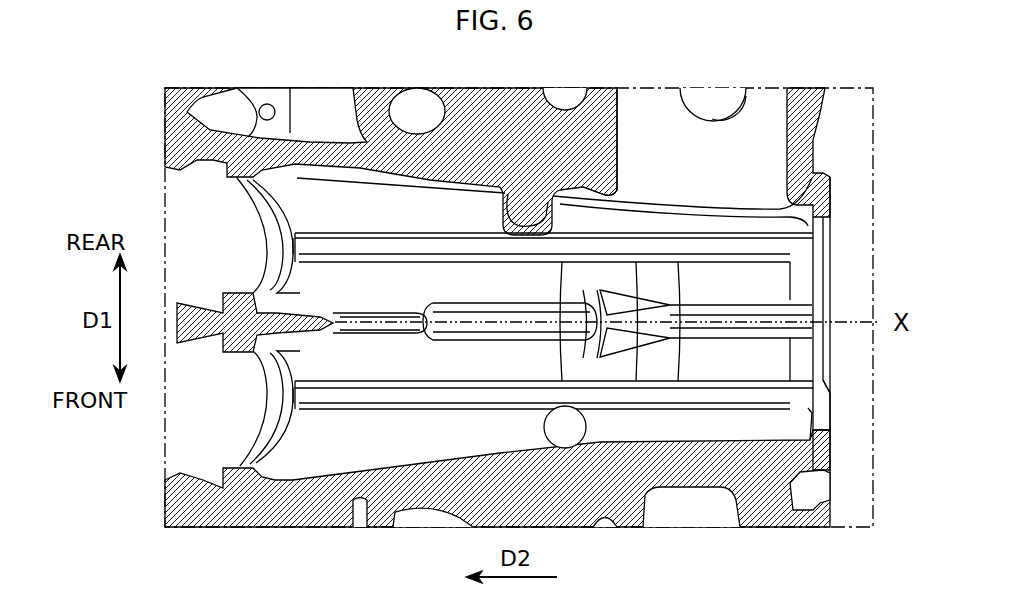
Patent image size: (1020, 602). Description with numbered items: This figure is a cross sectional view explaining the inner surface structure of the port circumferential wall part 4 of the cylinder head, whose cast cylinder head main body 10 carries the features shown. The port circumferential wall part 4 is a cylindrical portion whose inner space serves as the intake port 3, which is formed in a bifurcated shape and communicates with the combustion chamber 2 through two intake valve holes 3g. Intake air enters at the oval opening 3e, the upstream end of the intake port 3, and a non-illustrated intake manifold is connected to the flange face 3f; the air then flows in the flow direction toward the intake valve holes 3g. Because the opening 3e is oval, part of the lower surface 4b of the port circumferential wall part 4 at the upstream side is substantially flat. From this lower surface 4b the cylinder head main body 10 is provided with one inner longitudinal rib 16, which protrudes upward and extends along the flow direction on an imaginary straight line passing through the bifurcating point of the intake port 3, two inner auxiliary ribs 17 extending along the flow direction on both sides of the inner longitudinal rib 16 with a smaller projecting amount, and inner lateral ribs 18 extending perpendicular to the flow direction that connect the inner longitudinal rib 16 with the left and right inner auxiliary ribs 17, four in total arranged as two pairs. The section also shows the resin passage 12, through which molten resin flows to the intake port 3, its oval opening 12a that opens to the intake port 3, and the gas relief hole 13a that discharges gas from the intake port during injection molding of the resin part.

The cylinder head main body 10 is at (806, 84).
The resin passage 12 is at (715, 167).
The opening of the resin passage 12a is at (787, 157).
The inner auxiliary rib 17 is at (468, 247).
The lower surface of the port circumferential wall part 4b is at (780, 298).
The inner lateral rib 18 is at (566, 281).
The inner longitudinal rib 16 is at (800, 312).
The intake port 3 is at (834, 252).
The intake valve hole 3g is at (260, 223).
The combustion chamber 2 is at (194, 283).
The port circumferential wall part 4 is at (833, 462).
The flange face 3f is at (830, 445).
The opening of the intake port 3e is at (832, 403).
The gas relief hole 13a is at (583, 437).